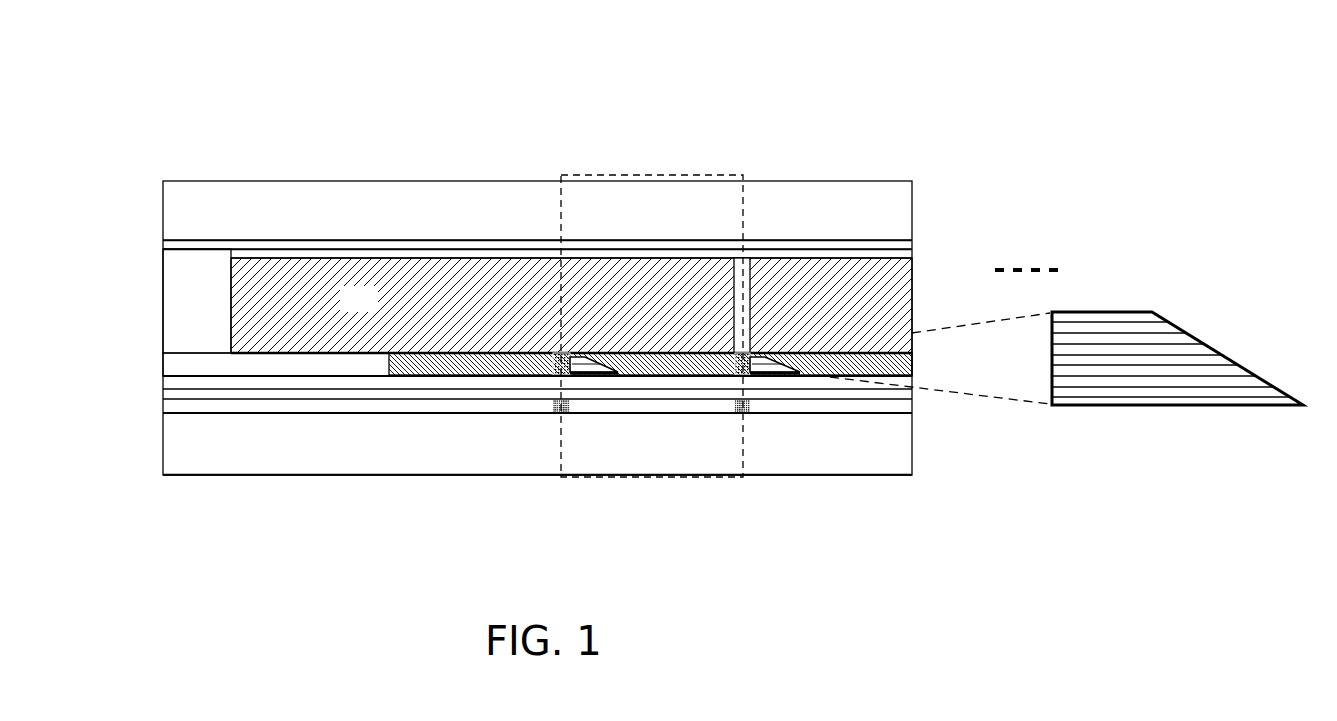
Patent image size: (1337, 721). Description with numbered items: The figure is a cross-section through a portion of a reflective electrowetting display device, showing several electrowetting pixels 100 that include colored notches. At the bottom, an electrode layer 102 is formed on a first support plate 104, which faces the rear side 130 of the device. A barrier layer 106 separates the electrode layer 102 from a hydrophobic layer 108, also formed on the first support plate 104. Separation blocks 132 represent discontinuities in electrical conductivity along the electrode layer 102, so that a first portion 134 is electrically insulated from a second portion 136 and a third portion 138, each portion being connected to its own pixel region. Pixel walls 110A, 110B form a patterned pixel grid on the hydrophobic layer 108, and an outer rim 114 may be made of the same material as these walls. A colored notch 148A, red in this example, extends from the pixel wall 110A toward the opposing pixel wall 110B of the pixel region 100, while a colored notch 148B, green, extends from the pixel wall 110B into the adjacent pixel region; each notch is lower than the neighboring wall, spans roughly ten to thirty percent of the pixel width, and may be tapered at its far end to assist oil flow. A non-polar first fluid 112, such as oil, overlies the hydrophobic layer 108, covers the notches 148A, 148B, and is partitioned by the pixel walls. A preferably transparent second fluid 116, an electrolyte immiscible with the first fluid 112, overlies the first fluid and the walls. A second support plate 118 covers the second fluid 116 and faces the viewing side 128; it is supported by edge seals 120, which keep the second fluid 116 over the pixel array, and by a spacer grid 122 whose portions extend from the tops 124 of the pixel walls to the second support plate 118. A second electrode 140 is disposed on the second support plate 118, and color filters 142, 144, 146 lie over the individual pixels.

The electrowetting pixel 100 is at (160, 92).
The electrode layer 102 is at (163, 405).
The first support plate 104 is at (262, 456).
The barrier layer 106 is at (163, 393).
The hydrophobic layer 108 is at (163, 380).
The pixel wall 110A is at (553, 365).
The pixel wall 110B is at (735, 365).
The first fluid 112 is at (900, 376).
The outer rim 114 is at (163, 363).
The second fluid 116 is at (375, 312).
The second support plate 118 is at (262, 222).
The edge seal 120 is at (215, 306).
The spacer grid 122 is at (755, 268).
The top of pixel wall 124 is at (553, 352).
The viewing side 128 is at (790, 127).
The rear side 130 is at (342, 547).
The separation block 132 is at (568, 411).
The first portion of electrode layer 134 is at (450, 414).
The second portion of electrode layer 136 is at (718, 414).
The third portion of electrode layer 138 is at (815, 413).
The second electrode 140 is at (313, 240).
The color filter 142 is at (466, 248).
The color filter 144 is at (602, 248).
The color filter 146 is at (820, 248).
The colored notch 148A is at (600, 373).
The colored notch 148B is at (788, 373).